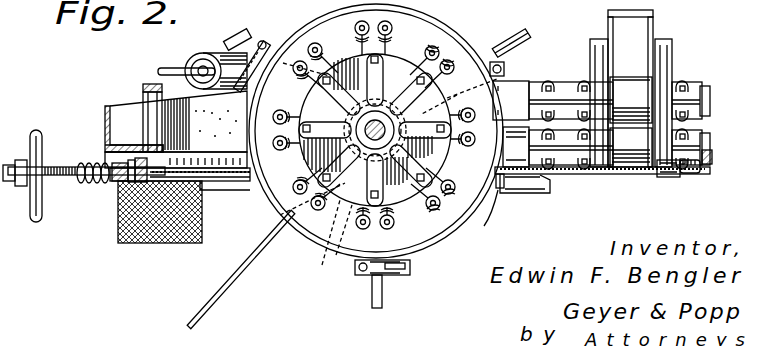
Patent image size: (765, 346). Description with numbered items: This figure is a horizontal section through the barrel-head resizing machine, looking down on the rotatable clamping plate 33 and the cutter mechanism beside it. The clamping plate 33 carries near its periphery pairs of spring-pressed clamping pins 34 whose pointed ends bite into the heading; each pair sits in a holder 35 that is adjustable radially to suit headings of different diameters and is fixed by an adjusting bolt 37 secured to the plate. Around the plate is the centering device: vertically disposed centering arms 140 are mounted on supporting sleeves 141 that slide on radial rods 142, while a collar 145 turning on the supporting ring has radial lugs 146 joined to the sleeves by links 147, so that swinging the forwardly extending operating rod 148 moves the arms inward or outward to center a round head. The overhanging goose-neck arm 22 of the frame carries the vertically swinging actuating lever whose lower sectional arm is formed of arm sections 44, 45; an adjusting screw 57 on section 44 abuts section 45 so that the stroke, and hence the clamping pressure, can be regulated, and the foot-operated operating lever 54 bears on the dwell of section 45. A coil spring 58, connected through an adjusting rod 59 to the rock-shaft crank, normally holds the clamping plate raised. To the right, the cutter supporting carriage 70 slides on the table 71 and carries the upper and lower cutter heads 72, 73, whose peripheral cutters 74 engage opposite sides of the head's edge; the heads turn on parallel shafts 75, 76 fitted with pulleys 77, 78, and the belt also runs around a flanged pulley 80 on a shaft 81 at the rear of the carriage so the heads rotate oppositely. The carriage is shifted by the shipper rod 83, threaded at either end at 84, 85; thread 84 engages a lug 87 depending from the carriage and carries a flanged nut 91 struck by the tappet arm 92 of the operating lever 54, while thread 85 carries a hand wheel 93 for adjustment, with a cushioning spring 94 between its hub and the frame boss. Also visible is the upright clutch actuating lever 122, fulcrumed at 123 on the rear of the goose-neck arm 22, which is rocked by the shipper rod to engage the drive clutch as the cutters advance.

The goose-neck arm 22 is at (107, 115).
The clamping plate 33 is at (425, 115).
The clamping pins 34 is at (358, 214).
The holder 35 is at (445, 183).
The adjusting bolt 37 is at (318, 122).
The arm section 44 is at (115, 148).
The arm section 45 is at (213, 152).
The operating lever 54 is at (178, 243).
The adjusting screw 57 is at (120, 182).
The coil spring 58 is at (206, 53).
The adjusting rod 59 is at (180, 68).
The cutter supporting carriage 70 is at (560, 92).
The table 71 is at (711, 129).
The upper cutter head 72 is at (521, 83).
The lower cutter head 73 is at (512, 189).
The cutters 74 is at (458, 97).
The shaft 75 is at (710, 92).
The shaft 76 is at (712, 152).
The pulley 77 is at (631, 100).
The pulley 78 is at (631, 147).
The flanged pulley 80 is at (621, 88).
The shaft 81 is at (672, 50).
The shipper rod 83 is at (246, 182).
The screw thread 84 is at (708, 175).
The screw thread 85 is at (76, 172).
The lug 87 is at (668, 178).
The flanged nut 91 is at (482, 219).
The tappet arm 92 is at (520, 195).
The hand wheel 93 is at (35, 130).
The cushioning spring 94 is at (85, 184).
The actuating lever 122 is at (143, 92).
The fulcrum 123 is at (150, 84).
The centering arms 140 is at (365, 275).
The supporting sleeves 141 is at (262, 42).
The radial rods 142 is at (384, 300).
The collar 145 is at (358, 62).
The radial lugs 146 is at (397, 62).
The links 147 is at (316, 176).
The operating rod 148 is at (214, 300).